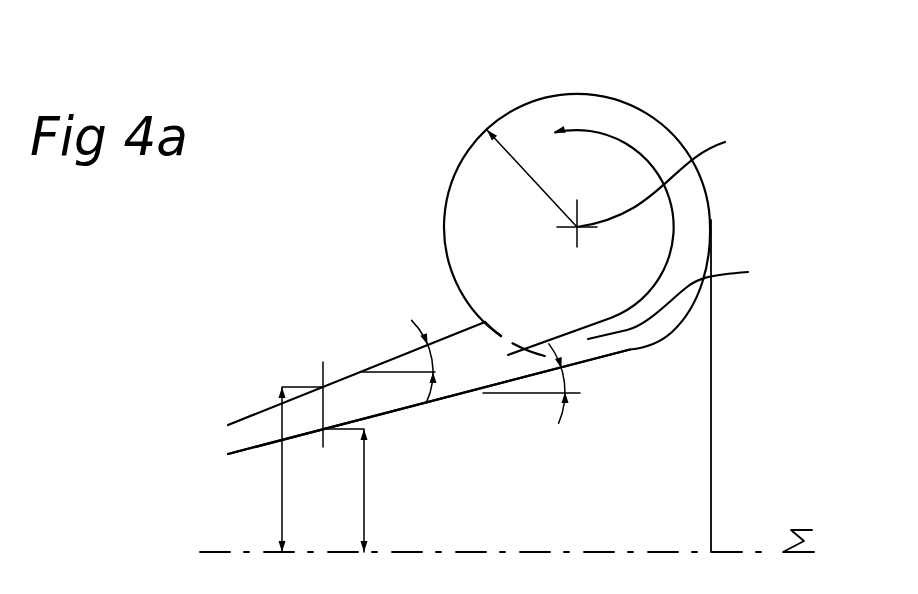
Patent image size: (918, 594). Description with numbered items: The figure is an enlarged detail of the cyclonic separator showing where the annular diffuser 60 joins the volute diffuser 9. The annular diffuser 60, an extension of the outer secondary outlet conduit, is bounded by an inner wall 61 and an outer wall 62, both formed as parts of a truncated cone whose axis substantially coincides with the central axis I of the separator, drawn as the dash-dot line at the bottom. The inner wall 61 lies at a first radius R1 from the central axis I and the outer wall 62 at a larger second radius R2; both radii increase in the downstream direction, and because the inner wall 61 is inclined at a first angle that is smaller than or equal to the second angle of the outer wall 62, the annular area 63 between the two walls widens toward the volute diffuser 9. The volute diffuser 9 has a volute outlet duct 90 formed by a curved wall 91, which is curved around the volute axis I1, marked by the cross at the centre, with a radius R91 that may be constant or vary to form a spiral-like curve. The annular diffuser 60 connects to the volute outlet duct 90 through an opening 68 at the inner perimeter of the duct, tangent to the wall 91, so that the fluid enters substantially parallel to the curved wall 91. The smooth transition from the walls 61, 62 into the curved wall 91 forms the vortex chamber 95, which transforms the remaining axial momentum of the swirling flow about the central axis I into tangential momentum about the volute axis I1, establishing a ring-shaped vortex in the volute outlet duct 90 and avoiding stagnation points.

The volute diffuser 9 is at (680, 125).
The wall 91 is at (708, 195).
The radius of wall 91 R91 is at (527, 168).
The volute outlet duct 90 is at (513, 218).
The volute axis I1 is at (663, 179).
The vortex chamber 95 is at (682, 300).
The outer wall 62 is at (384, 362).
The inner wall 61 is at (379, 414).
The annular diffuser 60 is at (264, 409).
The annular area 63 is at (405, 388).
The opening 68 is at (497, 335).
The first radius R1 is at (360, 490).
The second radius R2 is at (301, 469).
The central axis I is at (512, 534).